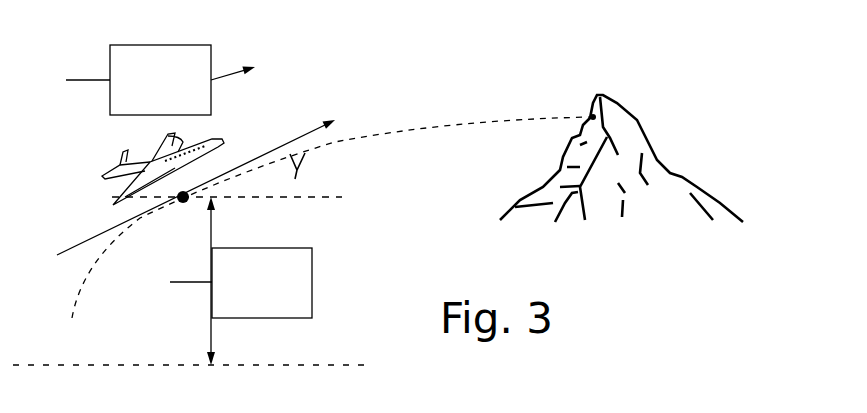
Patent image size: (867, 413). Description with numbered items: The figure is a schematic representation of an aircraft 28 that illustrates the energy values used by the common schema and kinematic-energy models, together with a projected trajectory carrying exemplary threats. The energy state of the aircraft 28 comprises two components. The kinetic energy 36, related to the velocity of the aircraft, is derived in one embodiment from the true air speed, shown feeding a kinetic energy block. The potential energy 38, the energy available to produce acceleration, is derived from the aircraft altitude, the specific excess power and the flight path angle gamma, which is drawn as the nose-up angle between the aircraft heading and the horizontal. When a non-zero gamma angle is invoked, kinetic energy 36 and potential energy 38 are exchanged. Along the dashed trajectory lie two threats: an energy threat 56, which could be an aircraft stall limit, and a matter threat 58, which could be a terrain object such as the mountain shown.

The aircraft 28 is at (165, 154).
The kinetic energy 36 is at (184, 46).
The potential energy 38 is at (287, 248).
The energy threat 56 is at (387, 134).
The matter threat 58 is at (590, 116).